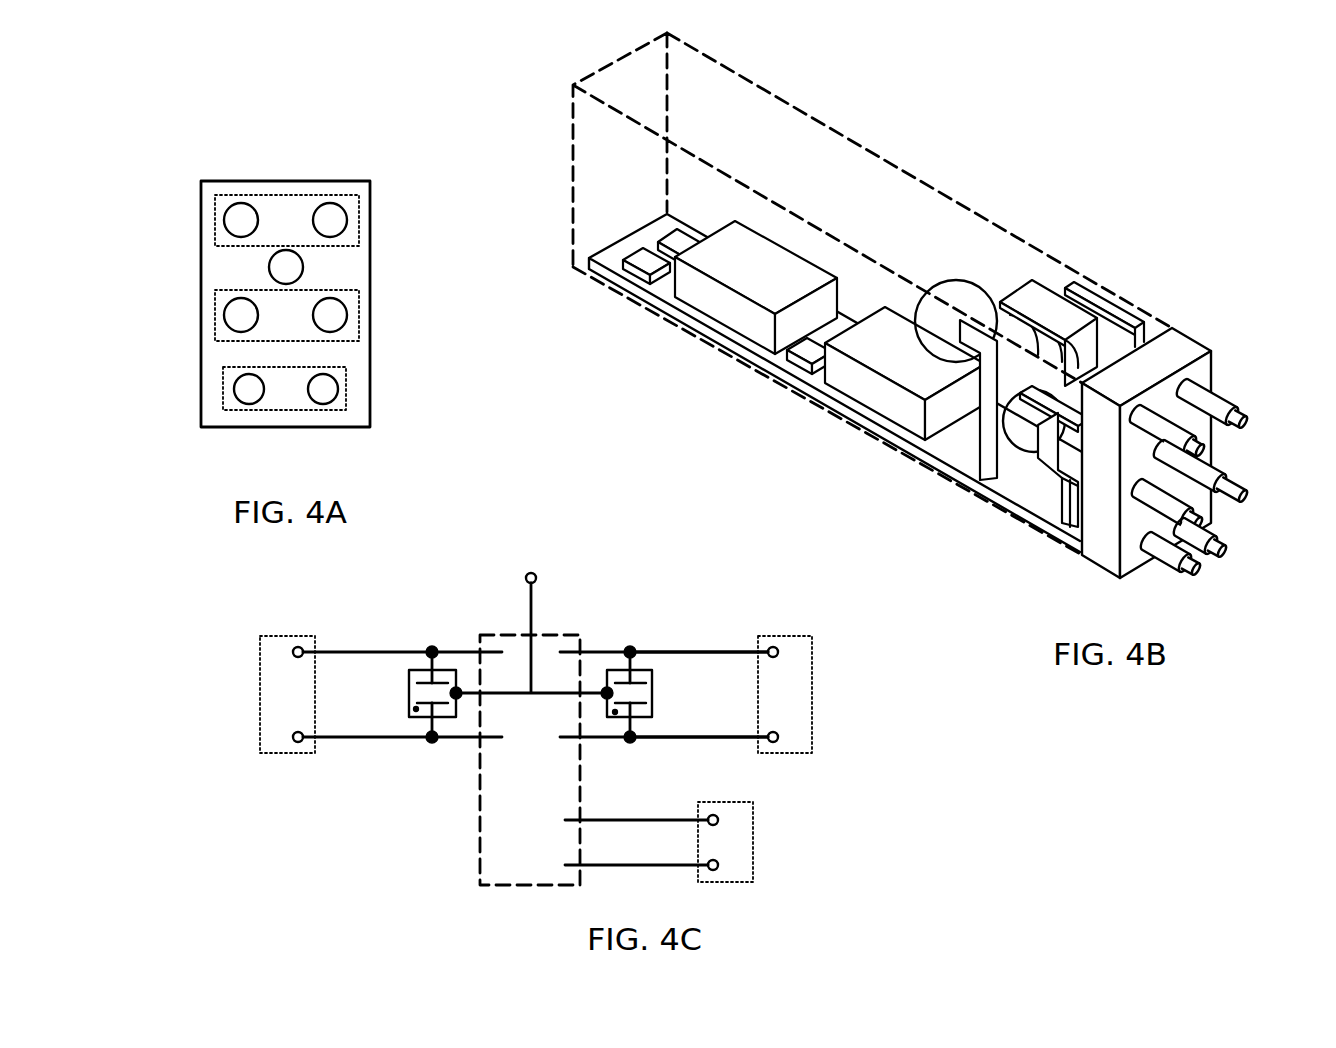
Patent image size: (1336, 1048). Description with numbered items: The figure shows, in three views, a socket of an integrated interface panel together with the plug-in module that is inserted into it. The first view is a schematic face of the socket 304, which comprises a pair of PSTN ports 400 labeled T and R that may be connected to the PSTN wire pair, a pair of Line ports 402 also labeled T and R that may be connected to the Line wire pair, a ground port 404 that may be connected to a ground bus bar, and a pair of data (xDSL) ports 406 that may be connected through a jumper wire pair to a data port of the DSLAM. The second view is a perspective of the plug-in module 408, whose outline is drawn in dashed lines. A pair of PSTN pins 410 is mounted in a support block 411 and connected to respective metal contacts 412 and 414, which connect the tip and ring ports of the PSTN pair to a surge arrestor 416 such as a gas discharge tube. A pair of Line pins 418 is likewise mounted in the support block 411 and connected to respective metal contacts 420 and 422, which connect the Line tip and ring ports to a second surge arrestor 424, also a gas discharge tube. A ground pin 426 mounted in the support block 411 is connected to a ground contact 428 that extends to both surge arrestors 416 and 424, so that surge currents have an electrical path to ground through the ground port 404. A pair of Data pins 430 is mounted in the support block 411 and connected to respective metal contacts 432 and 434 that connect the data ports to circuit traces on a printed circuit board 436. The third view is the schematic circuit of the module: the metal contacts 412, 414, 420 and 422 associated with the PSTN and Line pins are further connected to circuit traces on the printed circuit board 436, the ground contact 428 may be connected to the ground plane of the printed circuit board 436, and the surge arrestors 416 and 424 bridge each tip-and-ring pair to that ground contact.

In FIG. 4A, the socket 304 is at (217, 149).
In FIG. 4A, the PSTN ports 400 is at (359, 220).
In FIG. 4A, the Line ports 402 is at (359, 315).
In FIG. 4A, the ground port 404 is at (304, 267).
In FIG. 4A, the data (xDSL) ports 406 is at (340, 389).
In FIG. 4B, the plug-in module 408 is at (995, 203).
In FIG. 4B, the PSTN pins 410 is at (1243, 390).
In FIG. 4C, the PSTN pins 410 is at (257, 693).
In FIG. 4B, the support block 411 is at (1198, 350).
In FIG. 4B, the metal contact 412 is at (990, 400).
In FIG. 4C, the metal contact 412 is at (378, 738).
In FIG. 4B, the metal contact 414 is at (1112, 312).
In FIG. 4C, the metal contact 414 is at (352, 650).
In FIG. 4B, the surge arrestor 416 is at (935, 330).
In FIG. 4C, the surge arrestor 416 is at (409, 695).
In FIG. 4B, the Line pins 418 is at (1253, 477).
In FIG. 4C, the Line pins 418 is at (814, 695).
In FIG. 4B, the metal contact 420 is at (1058, 455).
In FIG. 4C, the metal contact 420 is at (707, 650).
In FIG. 4C, the metal contact 422 is at (693, 740).
In FIG. 4B, the surge arrestor 424 is at (1028, 445).
In FIG. 4C, the surge arrestor 424 is at (652, 702).
In FIG. 4B, the ground pin 426 is at (1222, 460).
In FIG. 4C, the ground pin 426 is at (537, 574).
In FIG. 4B, the ground contact 428 is at (1118, 347).
In FIG. 4C, the ground contact 428 is at (533, 612).
In FIG. 4B, the Data pins 430 is at (1230, 527).
In FIG. 4C, the Data pins 430 is at (755, 847).
In FIG. 4C, the metal contact 432 is at (637, 817).
In FIG. 4C, the metal contact 434 is at (652, 868).
In FIG. 4B, the Printed Circuit Board (PCB) 436 is at (910, 452).
In FIG. 4C, the Printed Circuit Board (PCB) 436 is at (546, 782).